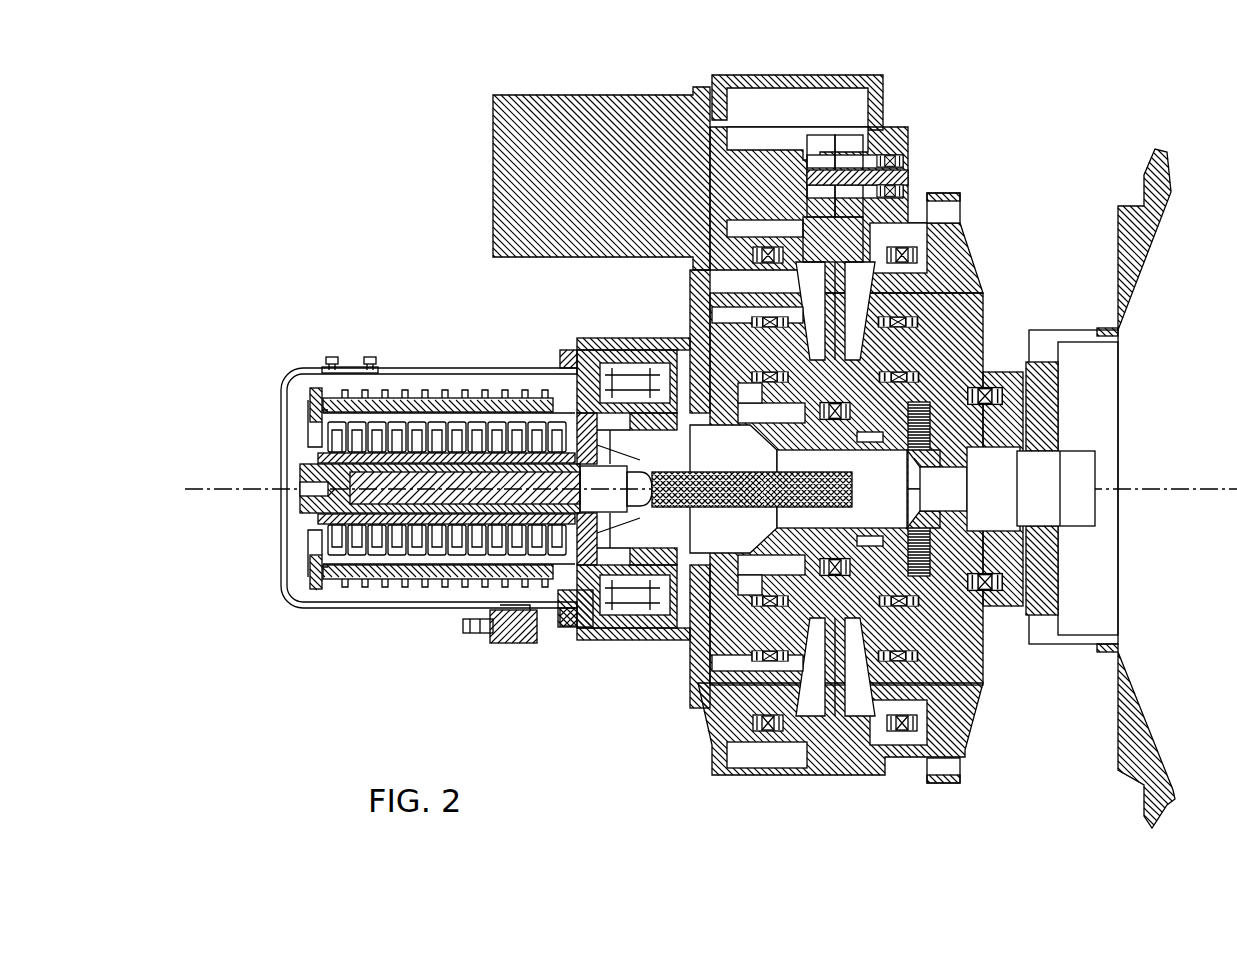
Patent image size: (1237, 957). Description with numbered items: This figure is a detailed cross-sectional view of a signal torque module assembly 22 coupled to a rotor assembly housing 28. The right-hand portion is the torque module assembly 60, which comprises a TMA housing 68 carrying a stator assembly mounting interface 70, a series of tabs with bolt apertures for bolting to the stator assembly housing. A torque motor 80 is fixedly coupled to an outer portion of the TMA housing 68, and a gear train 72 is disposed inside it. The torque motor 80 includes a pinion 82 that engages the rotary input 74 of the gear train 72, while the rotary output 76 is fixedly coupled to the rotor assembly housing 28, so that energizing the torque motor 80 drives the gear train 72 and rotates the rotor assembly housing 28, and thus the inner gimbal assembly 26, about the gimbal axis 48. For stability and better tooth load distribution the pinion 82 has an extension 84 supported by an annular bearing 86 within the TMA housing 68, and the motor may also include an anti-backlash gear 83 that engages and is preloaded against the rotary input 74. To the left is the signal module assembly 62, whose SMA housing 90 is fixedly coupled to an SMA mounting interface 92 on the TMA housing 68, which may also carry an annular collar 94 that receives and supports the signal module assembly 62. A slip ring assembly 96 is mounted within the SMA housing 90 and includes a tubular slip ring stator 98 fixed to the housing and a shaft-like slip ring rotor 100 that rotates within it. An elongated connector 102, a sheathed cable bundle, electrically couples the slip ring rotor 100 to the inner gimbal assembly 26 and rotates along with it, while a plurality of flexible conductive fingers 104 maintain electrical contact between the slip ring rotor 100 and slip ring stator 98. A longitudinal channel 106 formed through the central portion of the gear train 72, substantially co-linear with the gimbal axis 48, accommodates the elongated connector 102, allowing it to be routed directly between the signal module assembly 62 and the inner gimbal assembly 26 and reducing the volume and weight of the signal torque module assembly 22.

The signal torque module assembly 22 is at (314, 197).
The inner gimbal assembly 26 is at (1122, 180).
The rotor assembly housing 28 is at (1150, 728).
The gimbal axis 48 is at (196, 492).
The torque module assembly 60 is at (1020, 783).
The signal module assembly 62 is at (630, 652).
The TMA housing 68 is at (705, 728).
The stator assembly mounting interface 70 is at (962, 210).
The gear train 72 is at (935, 304).
The rotary input 74 is at (812, 228).
The rotary output 76 is at (983, 440).
The torque motor 80 is at (596, 98).
The pinion 82 is at (812, 136).
The anti-backlash gear 83 is at (843, 136).
The extension 84 is at (912, 181).
The annular bearing 86 is at (905, 160).
The SMA housing 90 is at (283, 412).
The SMA mounting interface 92 is at (566, 350).
The annular collar 94 is at (630, 340).
The slip ring assembly 96 is at (310, 443).
The slip ring stator 98 is at (413, 398).
The slip ring rotor 100 is at (312, 518).
The elongated connector 102 is at (718, 460).
The flexible conductive fingers 104 is at (352, 538).
The longitudinal channel 106 is at (705, 543).